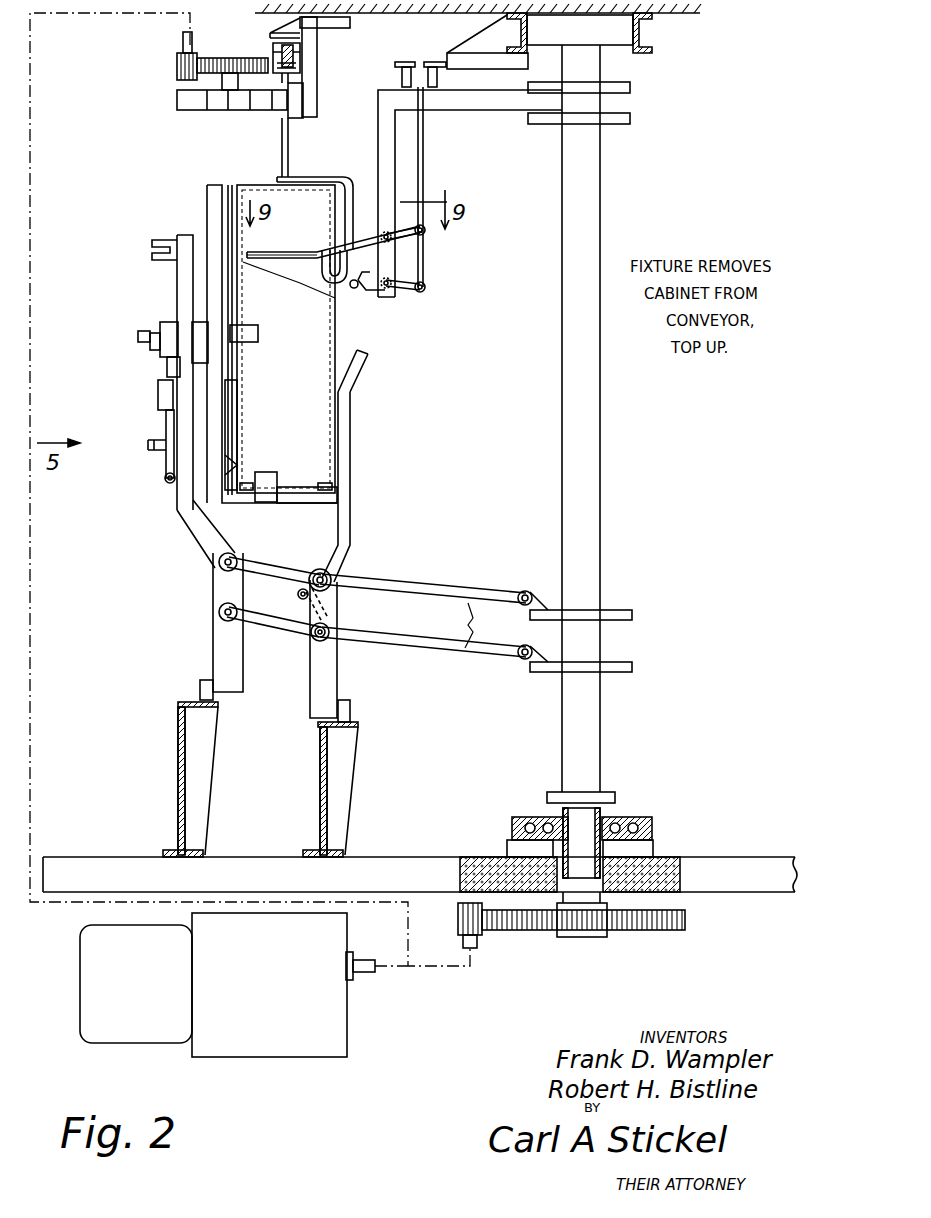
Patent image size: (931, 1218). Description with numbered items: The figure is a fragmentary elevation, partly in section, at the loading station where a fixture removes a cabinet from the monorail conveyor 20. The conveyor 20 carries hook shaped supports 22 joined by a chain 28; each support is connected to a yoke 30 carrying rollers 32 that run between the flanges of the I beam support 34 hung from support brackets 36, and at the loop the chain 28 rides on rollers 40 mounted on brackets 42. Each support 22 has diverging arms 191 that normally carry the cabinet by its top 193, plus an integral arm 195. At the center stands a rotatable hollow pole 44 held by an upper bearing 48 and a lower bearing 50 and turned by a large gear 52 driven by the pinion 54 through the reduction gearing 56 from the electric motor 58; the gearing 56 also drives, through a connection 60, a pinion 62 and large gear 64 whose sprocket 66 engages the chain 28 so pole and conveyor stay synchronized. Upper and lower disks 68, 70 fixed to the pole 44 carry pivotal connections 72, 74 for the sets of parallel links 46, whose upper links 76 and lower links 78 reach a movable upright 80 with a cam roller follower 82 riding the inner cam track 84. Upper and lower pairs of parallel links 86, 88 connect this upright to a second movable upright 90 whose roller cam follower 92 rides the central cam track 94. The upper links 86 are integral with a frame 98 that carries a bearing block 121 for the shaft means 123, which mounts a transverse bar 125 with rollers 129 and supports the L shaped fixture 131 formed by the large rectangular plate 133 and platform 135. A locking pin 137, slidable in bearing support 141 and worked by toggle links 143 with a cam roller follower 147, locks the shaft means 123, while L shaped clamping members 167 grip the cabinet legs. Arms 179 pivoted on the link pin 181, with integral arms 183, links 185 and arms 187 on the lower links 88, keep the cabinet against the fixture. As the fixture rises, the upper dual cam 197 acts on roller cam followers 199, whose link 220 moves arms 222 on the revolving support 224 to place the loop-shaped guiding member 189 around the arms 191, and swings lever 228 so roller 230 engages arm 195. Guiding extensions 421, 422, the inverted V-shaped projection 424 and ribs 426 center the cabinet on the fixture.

The monorail conveyor 20 is at (300, 76).
The hook shaped supports 22 is at (330, 178).
The chain 28 is at (288, 112).
The yoke 30 is at (297, 65).
The rollers 32 is at (278, 50).
The I beam support 34 is at (295, 47).
The support brackets 36 is at (272, 33).
The rollers 40 is at (291, 122).
The brackets 42 is at (314, 110).
The rotatable hollow pole 44 is at (562, 383).
The sets of parallel links 46 is at (482, 625).
The upper bearing 48 is at (590, 40).
The lower bearing 50 is at (618, 818).
The large gear 52 is at (685, 920).
The pinion 54 is at (462, 915).
The reduction gearing 56 is at (330, 1008).
The electric motor 58 is at (80, 960).
The connection 60 is at (42, 762).
The pinion 62 is at (177, 62).
The large gear 64 is at (210, 58).
The sprocket 66 is at (177, 100).
The upper disk 68 is at (617, 610).
The lower disk 70 is at (617, 662).
The dual pivotal connections 72 is at (529, 590).
The dual pivotal connections 74 is at (526, 660).
The upper links 76 is at (486, 585).
The lower links 78 is at (490, 657).
The movable upright 80 is at (337, 688).
The cam roller follower 82 is at (350, 708).
The inner cam track 84 is at (345, 730).
The upper pair of parallel links 86 is at (285, 567).
The lower pair of parallel links 88 is at (280, 622).
The second movable upright 90 is at (213, 632).
The roller cam follower 92 is at (200, 690).
The central cam track 94 is at (206, 725).
The frame 98 is at (185, 515).
The bearing block 121 is at (200, 325).
The shaft means 123 is at (168, 328).
The transverse bar 125 is at (150, 343).
The rollers 129 is at (140, 337).
The L shaped fixture 131 is at (207, 195).
The large rectangular plate 133 is at (228, 190).
The platform 135 is at (325, 500).
The locking pin 137 is at (168, 367).
The bearing support 141 is at (165, 392).
The toggle links 143 is at (166, 423).
The cam roller follower 147 is at (148, 446).
The L shaped clamping members 167 is at (152, 246).
The arms 179 is at (352, 425).
The link pin 181 is at (333, 580).
The integral arms 183 is at (332, 604).
The links 185 is at (298, 594).
The arms 187 is at (335, 628).
The loop-shaped guiding member 189 is at (318, 248).
The diverging arms 191 is at (262, 252).
The top 193 is at (260, 185).
The integral arm 195 is at (368, 288).
The upper dual cam 197 is at (428, 62).
The roller cam followers 199 is at (400, 63).
The link 220 is at (423, 166).
The arms 222 is at (408, 235).
The revolving support 224 is at (393, 131).
The lever 228 is at (410, 288).
The roller 230 is at (355, 290).
The guiding extensions 421 is at (268, 480).
The guiding extensions 422 is at (255, 340).
The inverted V-shaped projection 424 is at (235, 447).
The laterally extending ribs 426 is at (234, 468).